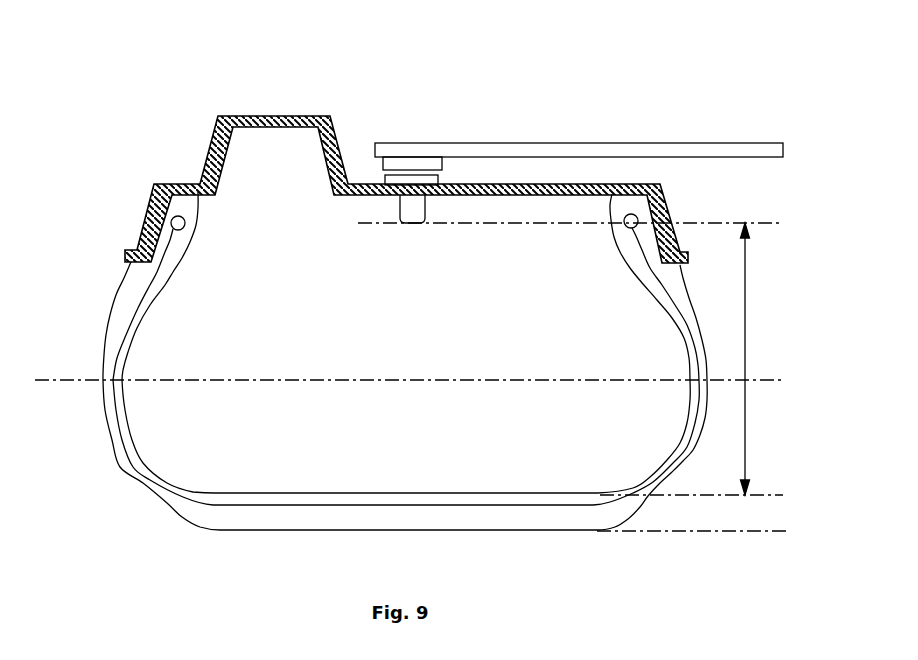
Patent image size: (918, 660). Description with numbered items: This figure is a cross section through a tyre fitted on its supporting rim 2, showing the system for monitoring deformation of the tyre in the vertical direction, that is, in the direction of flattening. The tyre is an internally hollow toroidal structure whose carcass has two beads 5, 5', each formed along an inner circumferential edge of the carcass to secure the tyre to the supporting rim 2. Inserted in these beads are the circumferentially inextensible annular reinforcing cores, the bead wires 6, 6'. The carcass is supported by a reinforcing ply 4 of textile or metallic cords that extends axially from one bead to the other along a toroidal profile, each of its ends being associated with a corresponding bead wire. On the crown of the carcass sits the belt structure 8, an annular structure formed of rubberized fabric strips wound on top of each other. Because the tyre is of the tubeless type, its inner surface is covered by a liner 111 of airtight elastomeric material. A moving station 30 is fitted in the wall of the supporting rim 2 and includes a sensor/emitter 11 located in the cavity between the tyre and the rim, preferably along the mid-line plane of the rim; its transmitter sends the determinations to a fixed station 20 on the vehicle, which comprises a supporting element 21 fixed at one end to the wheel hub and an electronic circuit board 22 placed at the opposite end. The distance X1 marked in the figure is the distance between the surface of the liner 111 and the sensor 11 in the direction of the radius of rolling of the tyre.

The supporting rim 2 is at (263, 116).
The reinforcing ply 4 is at (431, 354).
The bead 5 is at (127, 275).
The bead 5' is at (697, 278).
The bead wire 6 is at (117, 249).
The bead wire 6' is at (719, 230).
The belt structure 8 is at (250, 517).
The sensor/emitter 11 is at (412, 212).
The fixed station 20 is at (558, 174).
The supporting element 21 is at (700, 155).
The electronic circuit board 22 is at (404, 163).
The moving station 30 is at (440, 178).
The liner 111 is at (382, 495).
The distance X1 is at (762, 359).